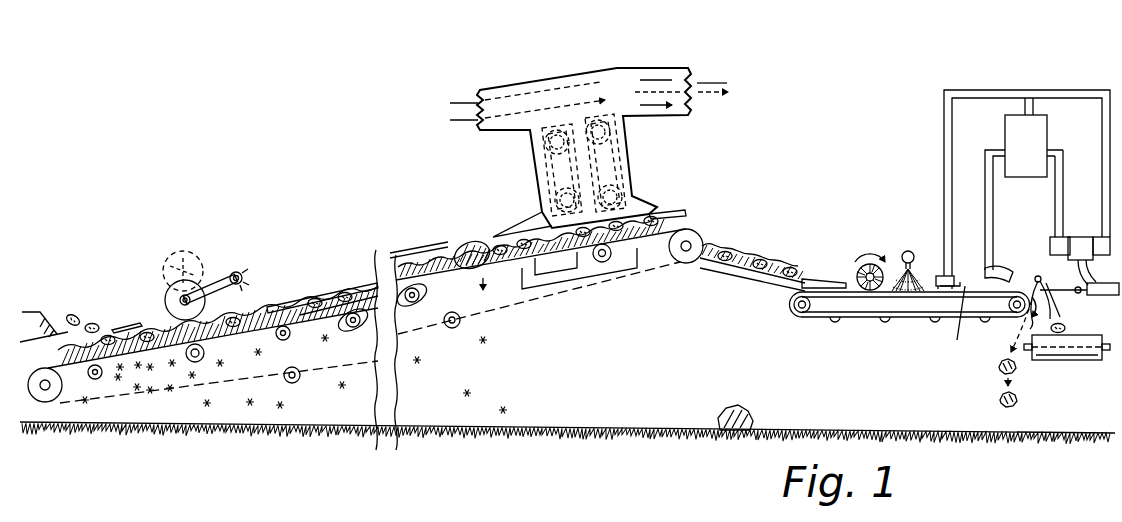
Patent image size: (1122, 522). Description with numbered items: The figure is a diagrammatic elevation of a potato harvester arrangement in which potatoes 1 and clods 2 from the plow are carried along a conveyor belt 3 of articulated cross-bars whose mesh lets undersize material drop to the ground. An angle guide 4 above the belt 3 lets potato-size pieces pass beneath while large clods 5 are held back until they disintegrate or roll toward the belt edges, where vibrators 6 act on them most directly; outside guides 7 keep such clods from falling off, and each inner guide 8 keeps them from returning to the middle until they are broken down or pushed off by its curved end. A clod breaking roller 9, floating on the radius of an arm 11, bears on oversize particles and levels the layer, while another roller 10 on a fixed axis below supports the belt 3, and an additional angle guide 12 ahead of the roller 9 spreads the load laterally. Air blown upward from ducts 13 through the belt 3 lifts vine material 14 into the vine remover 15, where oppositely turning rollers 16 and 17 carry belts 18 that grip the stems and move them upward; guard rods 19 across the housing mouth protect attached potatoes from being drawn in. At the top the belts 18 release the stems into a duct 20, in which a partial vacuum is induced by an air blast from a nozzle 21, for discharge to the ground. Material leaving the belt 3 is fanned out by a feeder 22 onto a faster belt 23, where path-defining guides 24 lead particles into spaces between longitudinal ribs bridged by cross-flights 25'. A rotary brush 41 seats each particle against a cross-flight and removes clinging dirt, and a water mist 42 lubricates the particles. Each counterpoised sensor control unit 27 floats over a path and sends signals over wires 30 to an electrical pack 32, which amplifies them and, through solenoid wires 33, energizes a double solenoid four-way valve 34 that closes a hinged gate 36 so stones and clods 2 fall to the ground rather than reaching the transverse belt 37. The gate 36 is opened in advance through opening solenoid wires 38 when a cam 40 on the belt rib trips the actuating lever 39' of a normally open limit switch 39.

The potatoes 1 is at (67, 317).
The clods 2 is at (87, 325).
The conveyor belt 3 is at (59, 361).
The angle guide 4 is at (283, 295).
The large clods 5 is at (112, 328).
The vibrators 6 is at (354, 327).
The outside guides 7 is at (360, 300).
The inner guide 8 is at (482, 240).
The clod breaking roller 9 is at (160, 302).
The roller 10 is at (202, 361).
The arm 11 is at (235, 284).
The additional angle guide 12 is at (134, 322).
The ducts 13 is at (522, 266).
The vine material 14 is at (553, 213).
The vine remover 15 is at (530, 158).
The rollers 16 is at (550, 141).
The rollers 17 is at (612, 132).
The belts 18 is at (543, 170).
The guard rods 19 is at (526, 232).
The duct 20 is at (653, 68).
The nozzle 21 is at (572, 86).
The feeder 22 is at (737, 272).
The belt 23 is at (815, 317).
The path-defining guides 24 is at (798, 286).
The cross-flights 25' is at (860, 336).
The sensor control unit 27 is at (1016, 264).
The wires 30 is at (1002, 208).
The electrical pack 32 is at (1048, 133).
The solenoid wires 33 is at (1057, 204).
The double solenoid four-way valve 34 is at (1085, 237).
The hinged gate 36 is at (1077, 309).
The transverse belt 37 is at (1080, 360).
The opening solenoid wires 38 is at (948, 135).
The limit switch 39 is at (925, 242).
The actuating lever 39' is at (958, 318).
The cam 40 is at (936, 320).
The rotary brush 41 is at (866, 260).
The mist 42 is at (899, 262).